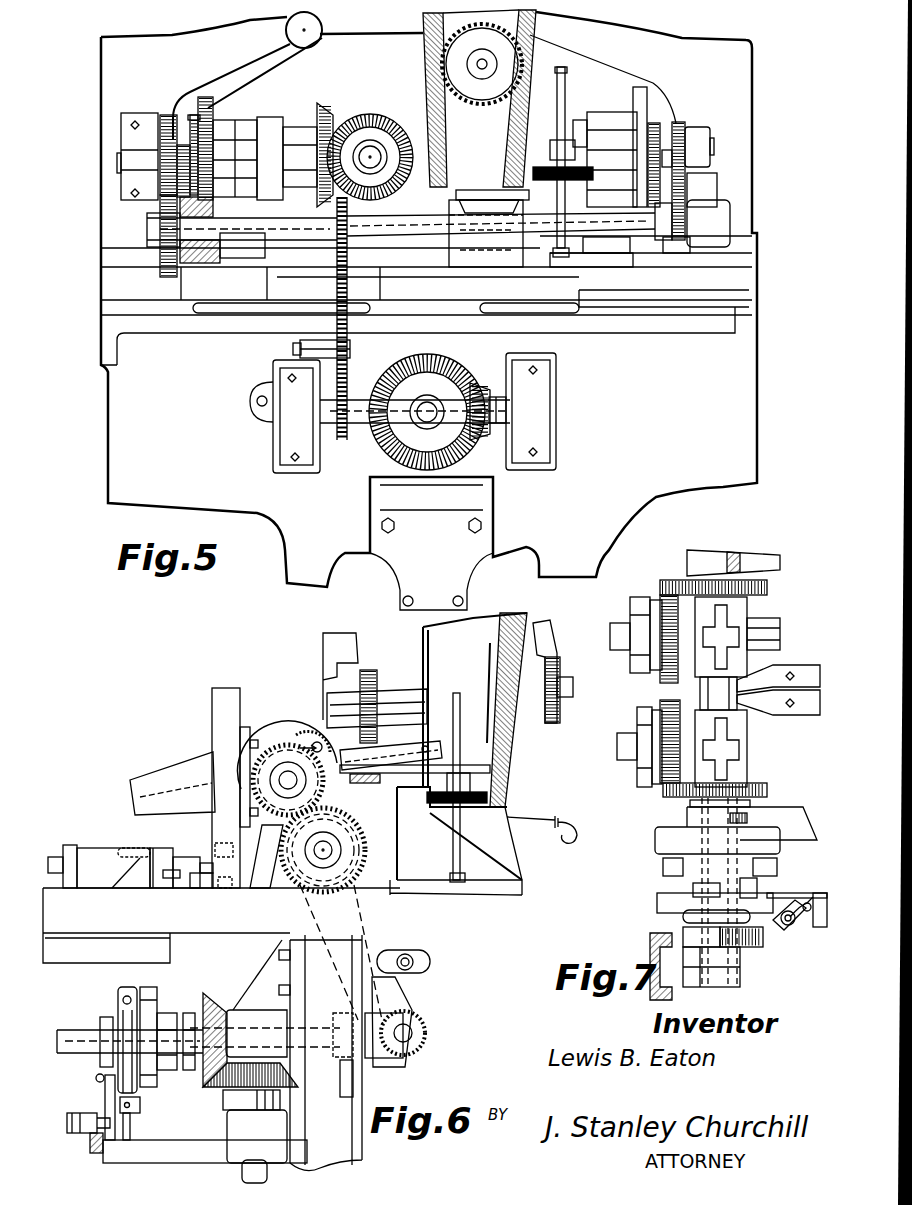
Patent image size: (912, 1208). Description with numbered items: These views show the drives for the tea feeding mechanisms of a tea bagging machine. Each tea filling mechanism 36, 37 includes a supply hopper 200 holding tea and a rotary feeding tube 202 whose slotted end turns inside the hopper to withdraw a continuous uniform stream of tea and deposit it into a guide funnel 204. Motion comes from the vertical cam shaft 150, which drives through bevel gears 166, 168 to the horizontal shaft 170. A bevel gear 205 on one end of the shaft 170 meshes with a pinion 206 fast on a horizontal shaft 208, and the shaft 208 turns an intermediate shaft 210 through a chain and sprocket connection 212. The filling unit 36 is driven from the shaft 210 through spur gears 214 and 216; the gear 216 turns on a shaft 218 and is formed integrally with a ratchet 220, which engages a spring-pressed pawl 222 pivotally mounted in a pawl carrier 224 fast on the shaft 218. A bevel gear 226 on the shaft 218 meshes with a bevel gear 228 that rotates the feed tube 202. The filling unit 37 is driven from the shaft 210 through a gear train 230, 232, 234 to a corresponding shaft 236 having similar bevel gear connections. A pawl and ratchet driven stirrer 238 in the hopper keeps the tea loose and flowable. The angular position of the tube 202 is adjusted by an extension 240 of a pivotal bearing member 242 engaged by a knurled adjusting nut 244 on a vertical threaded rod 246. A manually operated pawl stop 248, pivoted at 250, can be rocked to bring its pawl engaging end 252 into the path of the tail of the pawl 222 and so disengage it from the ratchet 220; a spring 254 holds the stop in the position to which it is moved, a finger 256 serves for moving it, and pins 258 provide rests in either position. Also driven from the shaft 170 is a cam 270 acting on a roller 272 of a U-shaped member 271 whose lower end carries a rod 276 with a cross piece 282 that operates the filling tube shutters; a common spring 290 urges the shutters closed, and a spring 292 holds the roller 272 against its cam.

In FIG. 5, the tea filling mechanism 36 is at (321, 86).
In FIG. 6, the tea filling mechanism 36 is at (533, 785).
In FIG. 5, the tea filling mechanism 37 is at (525, 111).
In FIG. 6, the vertical cam shaft 150 is at (310, 1170).
In FIG. 6, the bevel gear 166 is at (300, 1067).
In FIG. 6, the bevel gear 168 is at (227, 997).
In FIG. 6, the horizontal shaft 170 is at (90, 1000).
In FIG. 5, the supply hopper 200 is at (536, 90).
In FIG. 6, the supply hopper 200 is at (423, 653).
In FIG. 5, the rotary feeding tube 202 is at (503, 143).
In FIG. 6, the rotary feeding tube 202 is at (152, 780).
In FIG. 7, the rotary feeding tube 202 is at (623, 625).
In FIG. 6, the guide funnel 204 is at (107, 838).
In FIG. 5, the bevel gear 205 is at (476, 463).
In FIG. 6, the bevel gear 205 is at (357, 1092).
In FIG. 5, the pinion 206 is at (500, 343).
In FIG. 6, the pinion 206 is at (417, 1040).
In FIG. 5, the horizontal shaft 208 is at (360, 430).
In FIG. 6, the horizontal shaft 208 is at (390, 1033).
In FIG. 5, the intermediate shaft 210 is at (273, 233).
In FIG. 6, the intermediate shaft 210 is at (330, 853).
In FIG. 5, the chain and sprocket connection 212 is at (348, 277).
In FIG. 6, the chain and sprocket connection 212 is at (383, 930).
In FIG. 5, the spur gear 214 is at (172, 250).
In FIG. 6, the spur gear 214 is at (292, 817).
In FIG. 5, the spur gear 216 is at (173, 177).
In FIG. 6, the spur gear 216 is at (257, 830).
In FIG. 5, the shaft 218 is at (121, 160).
In FIG. 6, the shaft 218 is at (278, 782).
In FIG. 5, the ratchet 220 is at (185, 155).
In FIG. 6, the ratchet 220 is at (252, 767).
In FIG. 5, the spring-pressed pawl 222 is at (195, 113).
In FIG. 6, the spring-pressed pawl 222 is at (323, 735).
In FIG. 7, the spring-pressed pawl 222 is at (750, 912).
In FIG. 5, the pawl carrier 224 is at (213, 110).
In FIG. 6, the pawl carrier 224 is at (270, 727).
In FIG. 5, the bevel gear 226 is at (328, 112).
In FIG. 7, the bevel gear 226 is at (763, 785).
In FIG. 5, the bevel gear 228 is at (380, 114).
In FIG. 7, the bevel gear 228 is at (675, 790).
In FIG. 5, the gear 230 is at (682, 245).
In FIG. 5, the gear 232 is at (688, 185).
In FIG. 5, the gear 234 is at (676, 123).
In FIG. 5, the shaft 236 is at (714, 146).
In FIG. 5, the stirrer 238 is at (506, 47).
In FIG. 6, the extension 240 is at (480, 765).
In FIG. 6, the pivotal bearing member 242 is at (397, 750).
In FIG. 6, the knurled adjusting nut 244 is at (487, 797).
In FIG. 6, the vertical threaded rod 246 is at (467, 853).
In FIG. 6, the pawl stop 248 is at (360, 776).
In FIG. 7, the pawl stop 248 is at (657, 897).
In FIG. 7, the pivot 250 is at (787, 907).
In FIG. 7, the pawl engaging end 252 is at (780, 937).
In FIG. 7, the spring 254 is at (803, 940).
In FIG. 7, the finger 256 is at (820, 927).
In FIG. 7, the pins 258 is at (807, 905).
In FIG. 6, the cam 270 is at (150, 1017).
In FIG. 6, the U-shaped member 271 is at (120, 987).
In FIG. 6, the roller 272 is at (170, 978).
In FIG. 6, the rod 276 is at (130, 1127).
In FIG. 6, the cross piece 282 is at (140, 1107).
In FIG. 6, the spring 290 is at (100, 1080).
In FIG. 6, the spring 292 is at (93, 1147).